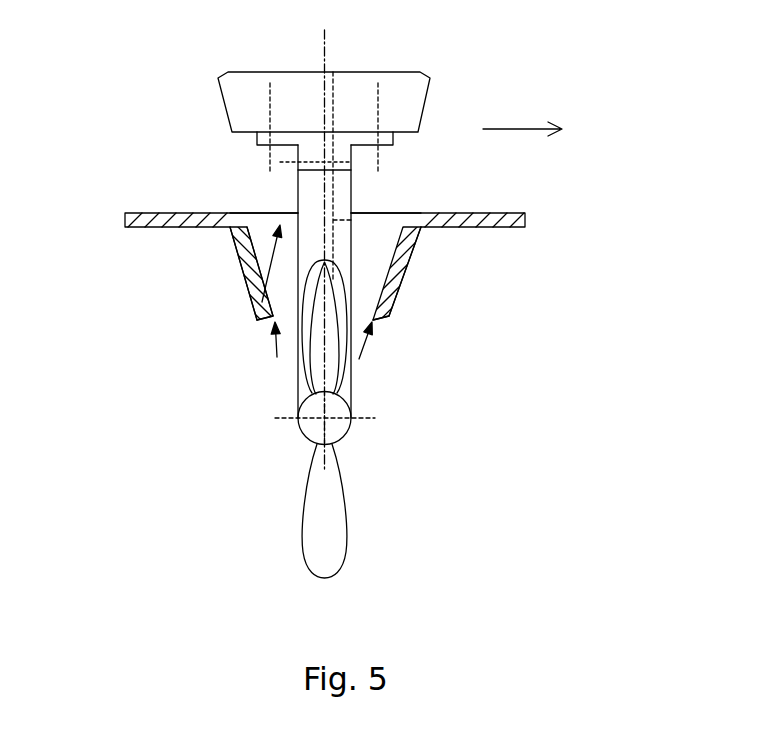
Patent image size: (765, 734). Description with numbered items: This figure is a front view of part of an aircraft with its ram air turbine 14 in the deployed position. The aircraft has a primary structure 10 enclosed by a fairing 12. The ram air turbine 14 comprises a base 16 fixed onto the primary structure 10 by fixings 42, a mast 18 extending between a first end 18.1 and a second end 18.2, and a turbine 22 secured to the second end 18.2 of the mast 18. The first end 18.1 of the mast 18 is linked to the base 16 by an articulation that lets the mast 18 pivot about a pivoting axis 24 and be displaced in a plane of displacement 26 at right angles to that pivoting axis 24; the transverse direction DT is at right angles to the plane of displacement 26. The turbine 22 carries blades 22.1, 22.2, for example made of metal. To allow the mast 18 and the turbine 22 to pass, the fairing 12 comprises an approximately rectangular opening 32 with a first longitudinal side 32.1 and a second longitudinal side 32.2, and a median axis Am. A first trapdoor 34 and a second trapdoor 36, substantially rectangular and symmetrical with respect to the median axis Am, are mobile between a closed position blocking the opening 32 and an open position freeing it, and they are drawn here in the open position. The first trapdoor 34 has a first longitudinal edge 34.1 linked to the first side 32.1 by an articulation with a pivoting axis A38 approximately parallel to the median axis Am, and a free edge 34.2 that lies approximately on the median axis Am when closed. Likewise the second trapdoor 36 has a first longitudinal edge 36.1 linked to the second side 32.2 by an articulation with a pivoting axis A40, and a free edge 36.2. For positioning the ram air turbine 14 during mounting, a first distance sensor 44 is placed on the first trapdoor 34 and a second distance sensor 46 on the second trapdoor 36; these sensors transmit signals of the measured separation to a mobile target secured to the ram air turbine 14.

The primary structure 10 is at (228, 93).
The fairing 12 is at (155, 213).
The ram air turbine 14 is at (304, 497).
The base 16 is at (353, 158).
The mast 18 is at (355, 240).
The first end 18.1 is at (297, 183).
The second end 18.2 is at (345, 383).
The turbine 22 is at (296, 430).
The blade 22.1 is at (320, 357).
The blade 22.2 is at (323, 522).
The pivoting axis 24 is at (297, 148).
The plane of displacement 26 is at (325, 113).
The opening 32 is at (250, 297).
The first longitudinal side 32.1 is at (455, 228).
The second longitudinal side 32.2 is at (232, 212).
The first trapdoor 34 is at (412, 291).
The first longitudinal edge 34.1 is at (395, 214).
The second free edge 34.2 is at (382, 324).
The second trapdoor 36 is at (200, 268).
The first longitudinal edge 36.1 is at (237, 270).
The second free edge 36.2 is at (257, 323).
The fixings 42 is at (263, 103).
The first distance sensor 44 is at (360, 360).
The second distance sensor 46 is at (277, 357).
The pivoting axis A38 is at (422, 230).
The pivoting axis A40 is at (227, 228).
The median axis Am is at (353, 220).
The transverse direction DT is at (508, 127).